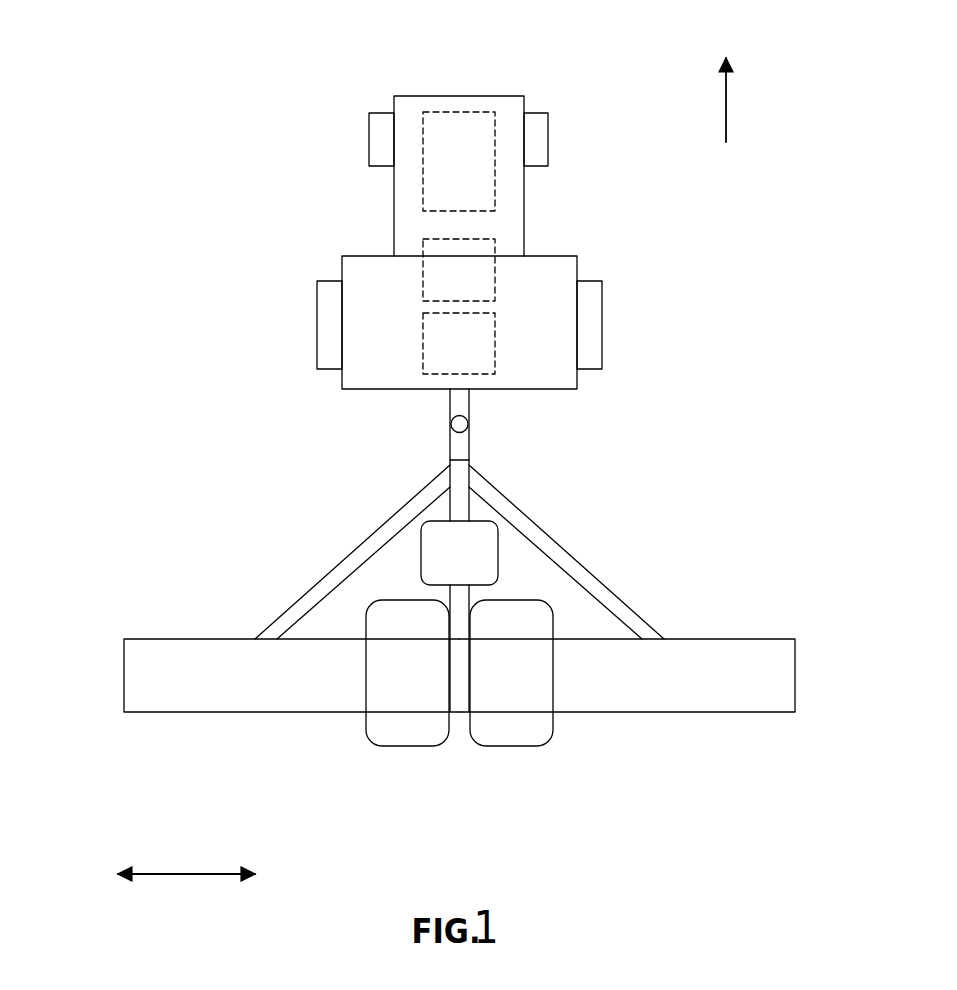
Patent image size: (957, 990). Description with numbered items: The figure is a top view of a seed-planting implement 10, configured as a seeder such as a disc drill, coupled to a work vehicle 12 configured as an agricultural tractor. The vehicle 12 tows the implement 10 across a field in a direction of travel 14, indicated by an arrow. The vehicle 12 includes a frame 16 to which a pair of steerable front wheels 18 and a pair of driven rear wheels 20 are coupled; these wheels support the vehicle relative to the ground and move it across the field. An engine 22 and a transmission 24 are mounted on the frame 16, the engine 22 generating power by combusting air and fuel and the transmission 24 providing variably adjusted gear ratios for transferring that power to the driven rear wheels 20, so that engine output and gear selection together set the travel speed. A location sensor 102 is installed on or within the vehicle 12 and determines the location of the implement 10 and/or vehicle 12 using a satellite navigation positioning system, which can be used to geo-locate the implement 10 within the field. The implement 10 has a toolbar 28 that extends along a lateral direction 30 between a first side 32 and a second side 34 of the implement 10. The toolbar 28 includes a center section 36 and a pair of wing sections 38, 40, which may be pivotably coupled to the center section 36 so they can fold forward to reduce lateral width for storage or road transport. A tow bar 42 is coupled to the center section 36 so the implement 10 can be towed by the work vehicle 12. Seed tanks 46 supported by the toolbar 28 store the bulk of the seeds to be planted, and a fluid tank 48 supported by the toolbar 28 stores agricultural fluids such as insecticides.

The seed-planting implement 10 is at (288, 486).
The work vehicle 12 is at (203, 140).
The direction of travel 14 is at (726, 105).
The frame 16 is at (394, 210).
The front wheels 18 is at (369, 140).
The rear wheels 20 is at (317, 325).
The engine 22 is at (448, 110).
The transmission 24 is at (495, 250).
The toolbar 28 is at (318, 713).
The lateral direction 30 is at (190, 874).
The first side 32 is at (105, 688).
The second side 34 is at (821, 688).
The center section 36 is at (469, 505).
The wing section 38 is at (186, 712).
The wing section 40 is at (645, 712).
The tow bar 42 is at (450, 451).
The seed tanks 46 is at (410, 746).
The fluid tank 48 is at (498, 560).
The location sensor 102 is at (495, 353).